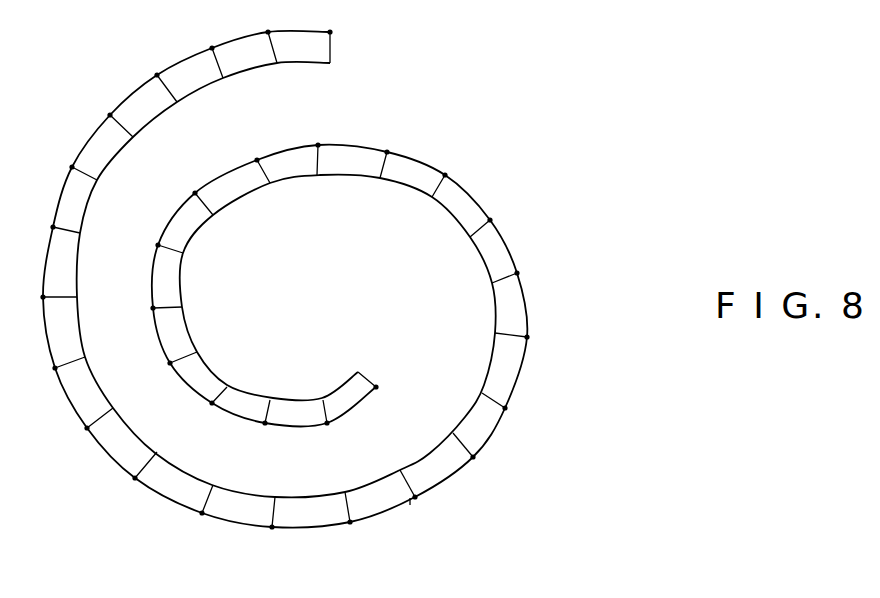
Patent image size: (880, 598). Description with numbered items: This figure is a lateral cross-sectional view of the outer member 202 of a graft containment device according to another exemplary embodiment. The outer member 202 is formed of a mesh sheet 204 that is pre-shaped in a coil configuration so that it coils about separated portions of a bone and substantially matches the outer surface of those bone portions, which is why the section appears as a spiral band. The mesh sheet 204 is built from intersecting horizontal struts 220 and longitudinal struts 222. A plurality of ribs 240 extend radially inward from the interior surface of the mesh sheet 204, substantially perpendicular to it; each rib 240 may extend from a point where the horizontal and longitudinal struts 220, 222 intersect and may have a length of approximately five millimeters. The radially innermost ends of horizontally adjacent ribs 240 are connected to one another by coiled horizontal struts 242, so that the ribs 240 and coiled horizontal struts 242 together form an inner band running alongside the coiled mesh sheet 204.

The outer member 202 is at (532, 110).
The ribs 240 is at (475, 233).
The mesh sheet 204 is at (520, 378).
The coiled horizontal struts 242 is at (493, 433).
The horizontal struts 220 is at (447, 480).
The longitudinal struts 222 is at (410, 505).